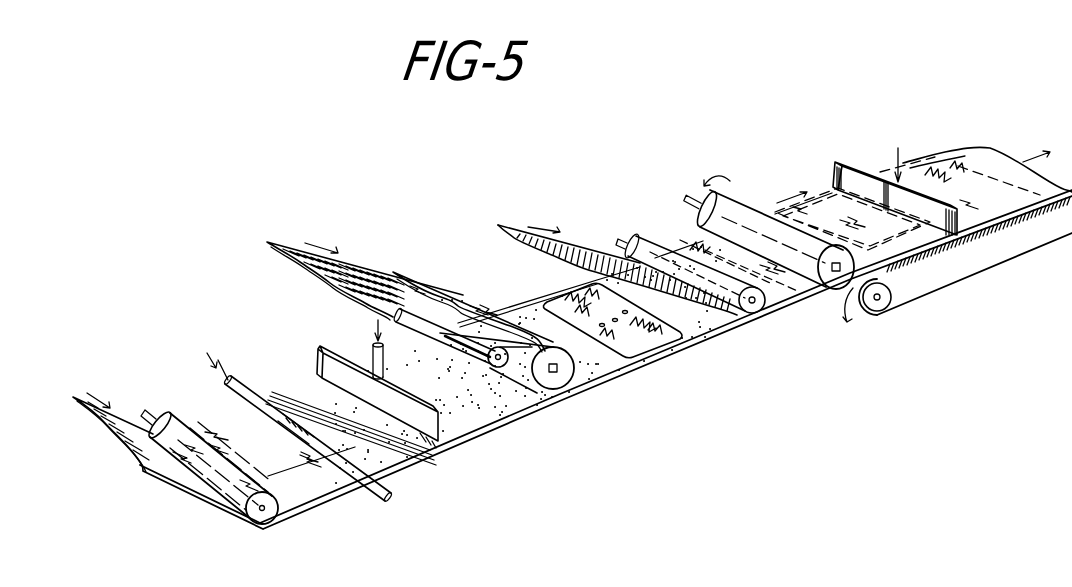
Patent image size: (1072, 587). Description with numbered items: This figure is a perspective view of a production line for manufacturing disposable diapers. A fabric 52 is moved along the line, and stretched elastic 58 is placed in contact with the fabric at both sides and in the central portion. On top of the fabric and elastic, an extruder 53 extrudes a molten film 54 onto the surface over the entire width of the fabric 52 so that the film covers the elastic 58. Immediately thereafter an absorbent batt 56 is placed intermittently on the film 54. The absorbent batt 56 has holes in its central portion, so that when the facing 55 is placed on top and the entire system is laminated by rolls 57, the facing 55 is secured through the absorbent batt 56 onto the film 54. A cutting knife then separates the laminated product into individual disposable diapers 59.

The fabric 52 is at (300, 478).
The extruder 53 is at (338, 354).
The molten film 54 is at (487, 412).
The facing 55 is at (597, 253).
The absorbent batt 56 is at (568, 303).
The rolls 57 is at (743, 213).
The stretched elastic 58 is at (367, 456).
The disposable diapers 59 is at (928, 168).